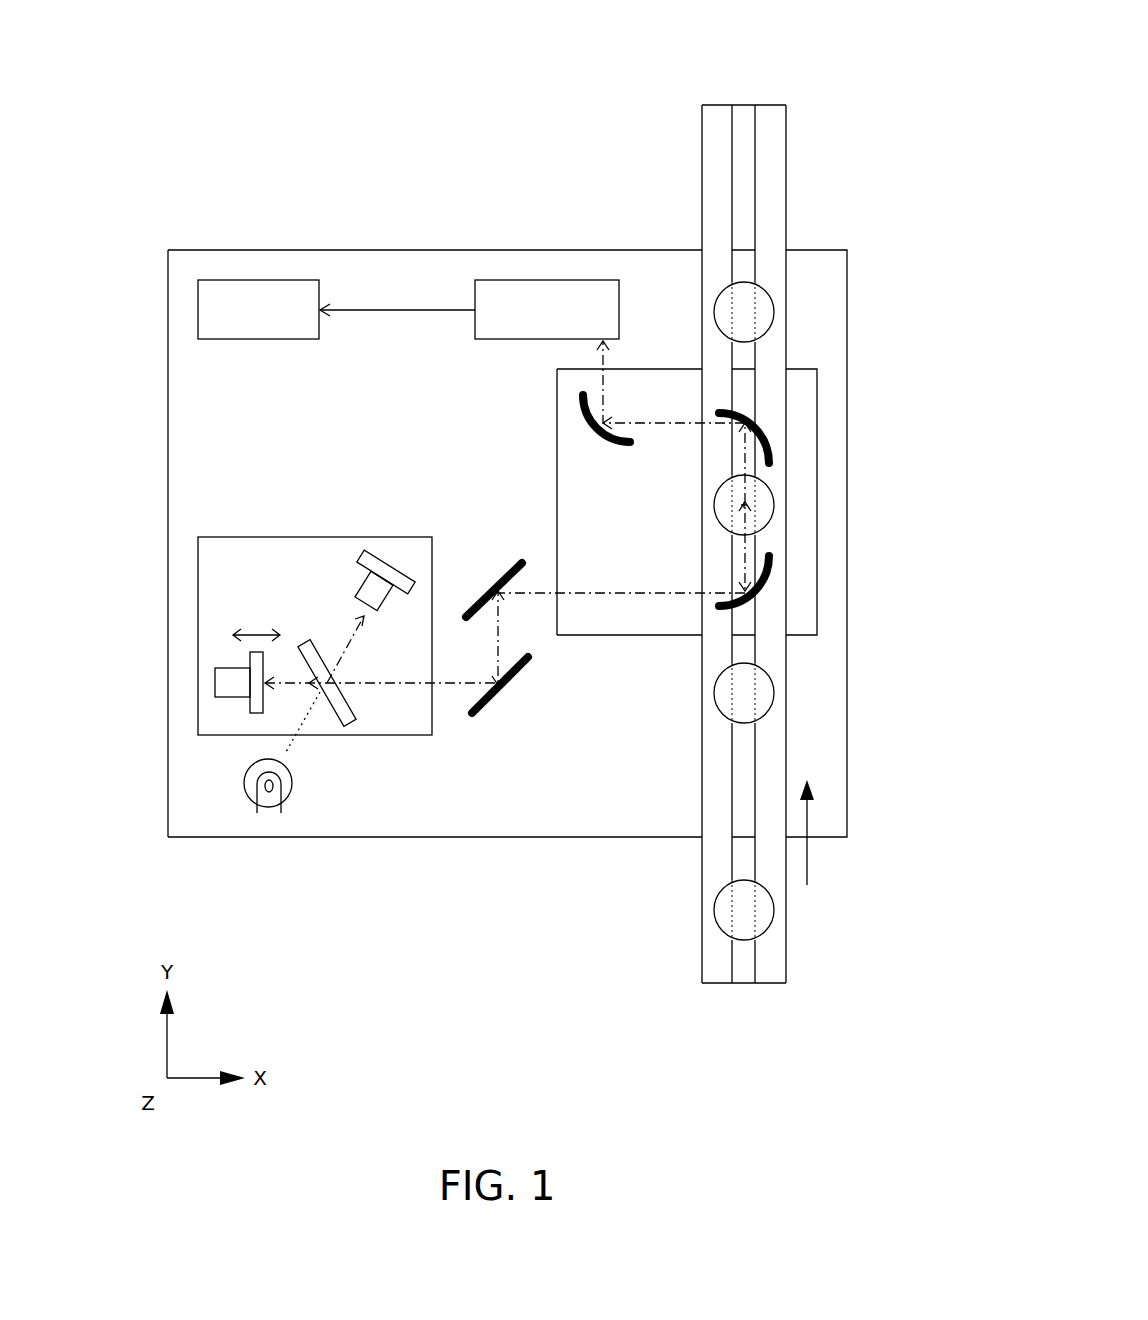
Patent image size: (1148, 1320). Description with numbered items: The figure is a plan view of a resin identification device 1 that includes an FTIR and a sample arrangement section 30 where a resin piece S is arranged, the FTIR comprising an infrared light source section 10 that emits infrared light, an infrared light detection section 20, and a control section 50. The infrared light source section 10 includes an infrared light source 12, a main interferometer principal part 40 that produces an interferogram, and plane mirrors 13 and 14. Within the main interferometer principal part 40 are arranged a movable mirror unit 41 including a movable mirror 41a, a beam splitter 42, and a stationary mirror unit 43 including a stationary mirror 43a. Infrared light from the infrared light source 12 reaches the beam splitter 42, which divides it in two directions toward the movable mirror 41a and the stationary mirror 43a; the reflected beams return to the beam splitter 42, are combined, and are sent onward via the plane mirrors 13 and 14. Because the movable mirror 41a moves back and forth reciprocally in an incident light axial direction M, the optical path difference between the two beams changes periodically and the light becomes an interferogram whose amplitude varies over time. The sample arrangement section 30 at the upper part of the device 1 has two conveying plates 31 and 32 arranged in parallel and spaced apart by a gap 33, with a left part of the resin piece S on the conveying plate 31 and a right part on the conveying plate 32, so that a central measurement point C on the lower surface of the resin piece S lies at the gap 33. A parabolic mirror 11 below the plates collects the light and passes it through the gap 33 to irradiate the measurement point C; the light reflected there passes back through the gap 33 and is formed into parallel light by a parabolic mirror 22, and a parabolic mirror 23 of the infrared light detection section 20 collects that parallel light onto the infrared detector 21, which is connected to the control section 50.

The resin identification device 1 is at (441, 143).
The infrared light source section 10 is at (635, 911).
The parabolic mirror 11 is at (718, 611).
The infrared light source 12 is at (268, 813).
The plane mirror 13 is at (466, 623).
The plane mirror 14 is at (513, 680).
The infrared light detection section 20 is at (577, 179).
The infrared detector 21 is at (548, 280).
The parabolic mirror 22 is at (719, 408).
The parabolic mirror 23 is at (636, 440).
The sample arrangement section 30 is at (742, 617).
The conveying plate 31 is at (713, 985).
The conveying plate 32 is at (770, 985).
The gap 33 is at (742, 958).
The main interferometer principal part 40 is at (372, 736).
The movable mirror unit 41 is at (214, 681).
The movable mirror 41a is at (249, 660).
The beam splitter 42 is at (303, 645).
The stationary mirror unit 43 is at (364, 592).
The stationary mirror 43a is at (387, 557).
The control section 50 is at (262, 280).
The central part (measurement point) C is at (749, 502).
The resin piece S is at (774, 504).
The incident light axial direction M is at (256, 624).